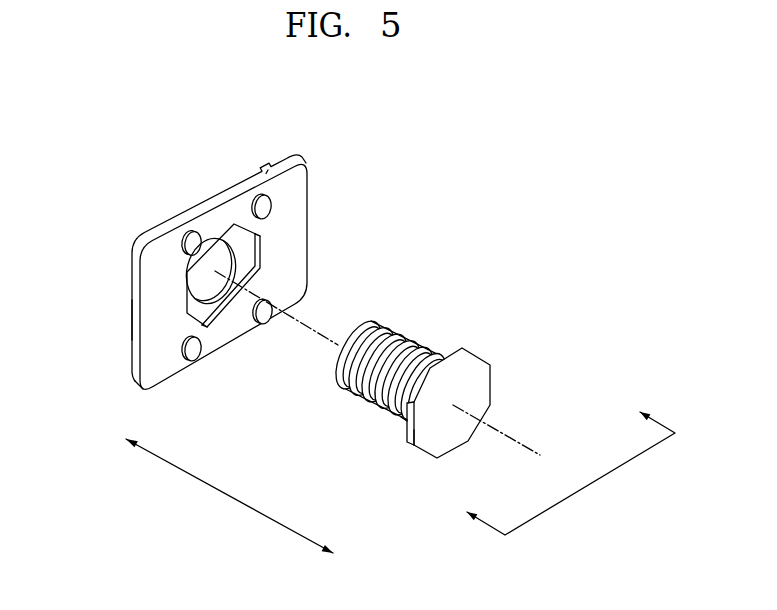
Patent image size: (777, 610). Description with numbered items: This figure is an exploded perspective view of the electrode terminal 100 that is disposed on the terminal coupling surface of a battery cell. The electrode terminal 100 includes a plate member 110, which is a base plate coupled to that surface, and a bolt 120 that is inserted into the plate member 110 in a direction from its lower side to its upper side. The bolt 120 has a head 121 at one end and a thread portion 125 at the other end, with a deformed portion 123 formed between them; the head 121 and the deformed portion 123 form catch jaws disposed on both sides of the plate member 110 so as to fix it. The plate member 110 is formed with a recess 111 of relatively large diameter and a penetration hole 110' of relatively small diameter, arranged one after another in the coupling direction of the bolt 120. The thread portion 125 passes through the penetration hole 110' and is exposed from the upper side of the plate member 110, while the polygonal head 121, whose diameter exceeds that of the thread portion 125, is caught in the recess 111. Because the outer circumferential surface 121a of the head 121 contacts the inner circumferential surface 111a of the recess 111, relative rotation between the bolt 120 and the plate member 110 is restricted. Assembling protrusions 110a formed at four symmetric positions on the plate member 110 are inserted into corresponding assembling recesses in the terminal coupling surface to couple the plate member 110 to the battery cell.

The electrode terminal 100 is at (568, 219).
The plate member 110 is at (219, 261).
The assembling protrusions 110a is at (261, 203).
The penetration hole 110' is at (137, 304).
The recess 111 is at (216, 307).
The inner circumferential surface 111a is at (257, 258).
The bolt 120 is at (481, 292).
The head 121 is at (483, 358).
The outer circumferential surface 121a is at (413, 428).
The deformed portion 123 is at (393, 411).
The thread portion 125 is at (403, 337).